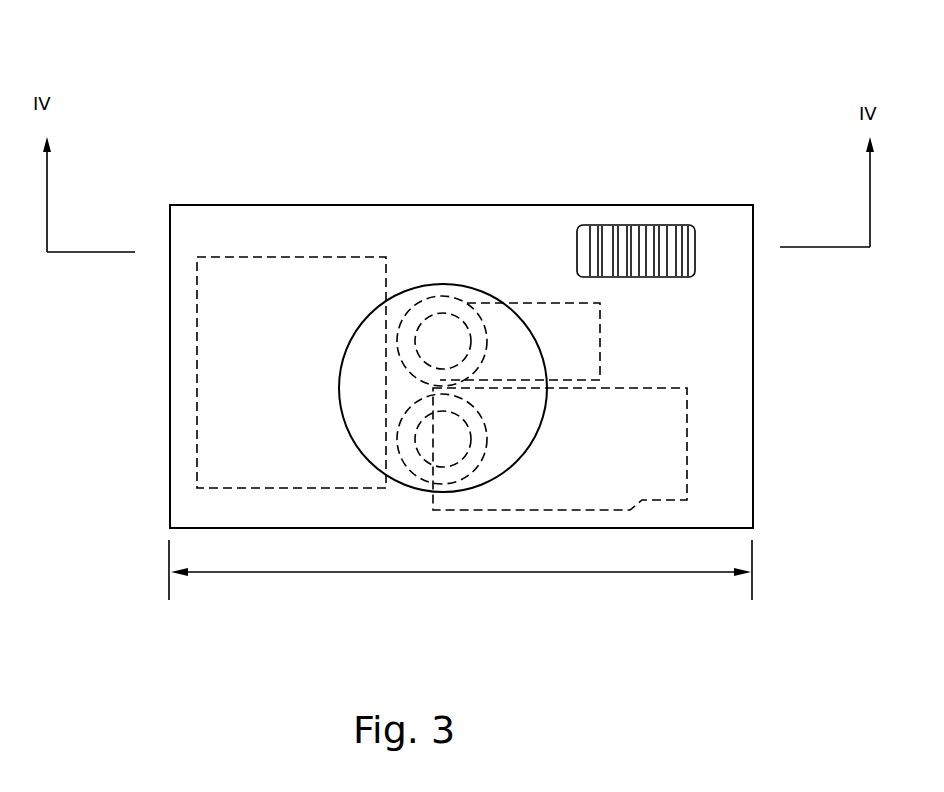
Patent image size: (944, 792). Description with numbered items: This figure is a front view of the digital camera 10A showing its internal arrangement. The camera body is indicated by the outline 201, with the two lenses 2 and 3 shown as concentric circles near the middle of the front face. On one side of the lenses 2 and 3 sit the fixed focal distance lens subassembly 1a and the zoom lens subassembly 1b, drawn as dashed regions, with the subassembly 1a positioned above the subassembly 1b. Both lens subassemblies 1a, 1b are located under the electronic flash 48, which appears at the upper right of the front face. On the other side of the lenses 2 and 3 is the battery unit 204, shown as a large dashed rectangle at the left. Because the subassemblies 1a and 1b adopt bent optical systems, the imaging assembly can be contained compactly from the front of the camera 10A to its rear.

The digital camera 10A is at (506, 98).
The substrate / card body 201 is at (443, 572).
The battery unit 204 is at (248, 403).
The lens 2 is at (466, 318).
The lens 3 is at (409, 461).
The fixed focal distance lens subassembly 1a is at (570, 340).
The zoom lens subassembly 1b is at (600, 453).
The electronic flash 48 is at (676, 250).